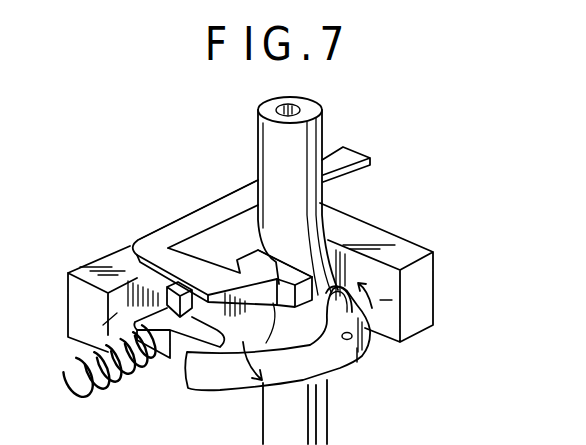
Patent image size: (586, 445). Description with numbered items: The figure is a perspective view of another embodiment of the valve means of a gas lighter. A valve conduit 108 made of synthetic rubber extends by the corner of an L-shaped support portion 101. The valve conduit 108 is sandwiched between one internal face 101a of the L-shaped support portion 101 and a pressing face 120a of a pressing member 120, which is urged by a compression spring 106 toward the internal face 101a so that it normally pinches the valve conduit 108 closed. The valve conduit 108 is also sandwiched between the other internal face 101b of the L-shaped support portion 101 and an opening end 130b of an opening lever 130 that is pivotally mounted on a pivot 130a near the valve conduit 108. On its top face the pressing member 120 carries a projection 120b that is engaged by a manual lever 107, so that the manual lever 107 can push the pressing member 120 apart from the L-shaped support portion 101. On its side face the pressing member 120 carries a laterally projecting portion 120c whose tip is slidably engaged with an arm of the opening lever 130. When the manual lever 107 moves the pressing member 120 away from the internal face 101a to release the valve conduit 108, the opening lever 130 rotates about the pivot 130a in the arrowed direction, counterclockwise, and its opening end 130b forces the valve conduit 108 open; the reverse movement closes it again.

The L-shaped support portion 101 is at (418, 247).
The internal face 101a is at (392, 298).
The other internal face 101b is at (103, 325).
The compression spring 106 is at (124, 372).
The manual lever 107 is at (365, 150).
The valve conduit 108 is at (317, 103).
The pressing member 120 is at (163, 355).
The pressing face 120a is at (318, 222).
The projection 120b is at (160, 299).
The laterally projecting portion 120c is at (210, 343).
The opening lever 130 is at (334, 368).
The pivot 130a is at (353, 370).
The opening end 130b is at (370, 330).